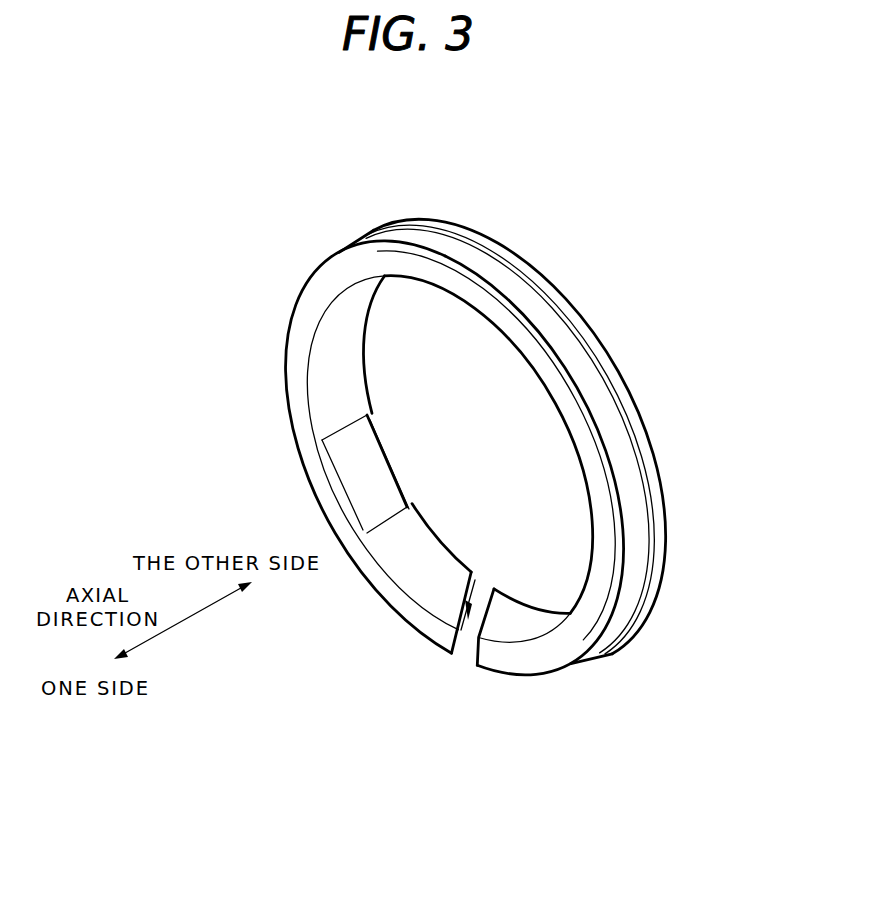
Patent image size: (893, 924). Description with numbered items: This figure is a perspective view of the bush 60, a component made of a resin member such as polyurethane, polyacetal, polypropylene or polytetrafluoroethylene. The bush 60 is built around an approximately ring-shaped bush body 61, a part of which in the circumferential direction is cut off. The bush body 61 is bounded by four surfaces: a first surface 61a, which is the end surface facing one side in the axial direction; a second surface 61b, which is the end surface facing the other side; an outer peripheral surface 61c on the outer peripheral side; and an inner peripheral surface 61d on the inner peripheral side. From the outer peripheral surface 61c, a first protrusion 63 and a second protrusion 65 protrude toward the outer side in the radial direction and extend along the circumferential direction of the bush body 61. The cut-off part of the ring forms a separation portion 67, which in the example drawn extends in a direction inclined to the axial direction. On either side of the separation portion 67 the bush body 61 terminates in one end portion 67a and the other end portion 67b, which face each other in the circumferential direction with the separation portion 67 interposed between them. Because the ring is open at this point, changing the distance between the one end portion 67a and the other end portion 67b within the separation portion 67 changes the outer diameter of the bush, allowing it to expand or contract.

The bush 60 is at (238, 190).
The bush body 61 is at (602, 672).
The first surface 61a is at (474, 300).
The second surface 61b is at (585, 311).
The outer peripheral surface 61c is at (548, 318).
The inner peripheral surface 61d is at (337, 337).
The first protrusion 63 is at (620, 517).
The second protrusion 65 is at (655, 453).
The separation portion 67 is at (458, 690).
The one end portion 67a is at (444, 590).
The other end portion 67b is at (503, 607).